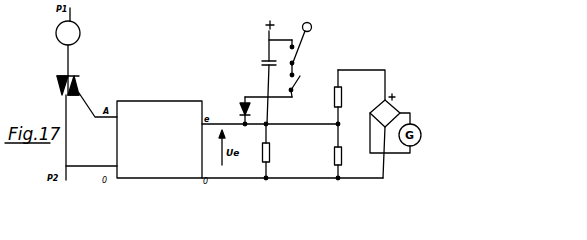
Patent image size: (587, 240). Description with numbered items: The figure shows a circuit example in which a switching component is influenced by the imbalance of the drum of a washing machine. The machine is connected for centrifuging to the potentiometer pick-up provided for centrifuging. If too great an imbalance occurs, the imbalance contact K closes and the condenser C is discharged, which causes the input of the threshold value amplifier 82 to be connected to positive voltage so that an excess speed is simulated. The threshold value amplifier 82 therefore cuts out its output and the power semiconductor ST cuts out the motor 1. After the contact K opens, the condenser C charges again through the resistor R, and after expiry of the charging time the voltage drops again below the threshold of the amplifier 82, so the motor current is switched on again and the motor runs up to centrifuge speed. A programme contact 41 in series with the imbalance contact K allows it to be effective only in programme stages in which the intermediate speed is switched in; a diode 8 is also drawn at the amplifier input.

The motor 1 is at (80, 33).
The diode 8 is at (249, 110).
The programme contact 41 is at (299, 82).
The threshold value amplifier 82 is at (160, 172).
The triac ST is at (80, 78).
The condenser C is at (265, 49).
The resistor R is at (270, 152).
The imbalance contact K is at (300, 44).